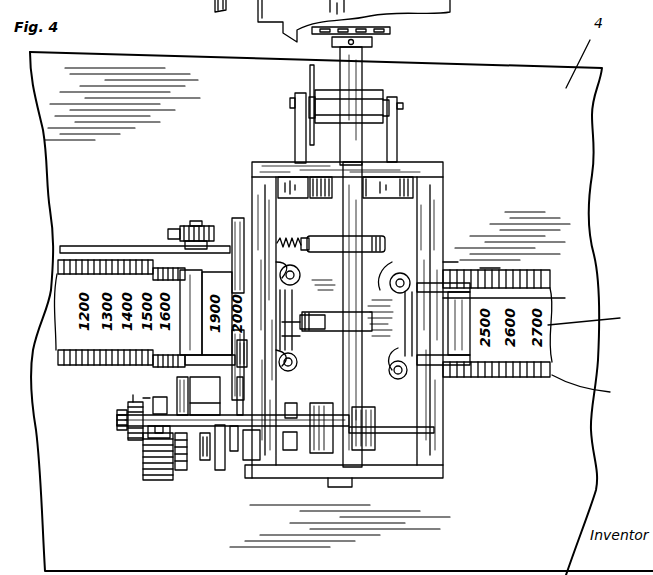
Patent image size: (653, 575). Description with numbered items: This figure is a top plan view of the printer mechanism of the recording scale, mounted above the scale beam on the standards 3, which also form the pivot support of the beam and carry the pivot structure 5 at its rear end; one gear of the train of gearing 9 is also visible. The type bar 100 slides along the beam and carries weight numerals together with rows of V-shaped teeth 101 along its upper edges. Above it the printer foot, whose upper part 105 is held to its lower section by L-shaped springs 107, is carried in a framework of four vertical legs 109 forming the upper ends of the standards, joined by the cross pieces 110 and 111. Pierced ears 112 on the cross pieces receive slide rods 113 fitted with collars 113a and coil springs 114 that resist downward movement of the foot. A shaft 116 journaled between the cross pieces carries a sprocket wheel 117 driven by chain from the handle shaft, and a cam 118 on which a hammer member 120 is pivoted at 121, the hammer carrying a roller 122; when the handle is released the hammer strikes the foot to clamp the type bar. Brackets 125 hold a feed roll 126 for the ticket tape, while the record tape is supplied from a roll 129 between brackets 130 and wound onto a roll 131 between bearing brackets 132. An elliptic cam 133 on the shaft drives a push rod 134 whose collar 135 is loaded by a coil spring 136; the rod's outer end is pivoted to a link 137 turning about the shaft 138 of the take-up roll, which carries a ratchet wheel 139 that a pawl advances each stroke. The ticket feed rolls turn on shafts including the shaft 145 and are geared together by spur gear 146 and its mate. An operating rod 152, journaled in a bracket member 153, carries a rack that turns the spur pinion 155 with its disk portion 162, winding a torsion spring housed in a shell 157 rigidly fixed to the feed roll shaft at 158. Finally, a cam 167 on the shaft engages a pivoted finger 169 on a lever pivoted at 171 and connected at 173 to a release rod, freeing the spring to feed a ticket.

The supporting standards 3 is at (284, 18).
The pivot structure 5 is at (581, 425).
The gear of train of gearing 9 is at (607, 265).
The type bar 100 is at (598, 317).
The V-shaped teeth 101 is at (595, 387).
The printer foot part 105 is at (464, 257).
The L-shaped springs 107 is at (430, 346).
The vertically extending legs 109 is at (476, 5).
The cross piece 110 is at (445, 200).
The cross piece 111 is at (410, 475).
The pierced ears 112 is at (396, 378).
The slide rods 113 is at (391, 369).
The collars 113a is at (506, 260).
The coil springs 114 is at (122, 430).
The shaft 116 is at (358, 72).
The sprocket wheel 117 is at (395, 32).
The cam 118 is at (350, 322).
The hammer member 120 is at (318, 312).
The pivot 121 is at (280, 336).
The roller 122 is at (280, 322).
The outstanding brackets 125 is at (397, 135).
The feed roll 126 is at (373, 95).
The roll 129 is at (518, 298).
The brackets 130 is at (458, 380).
The roll 131 is at (188, 296).
The bearing brackets 132 is at (232, 372).
The elliptic cam 133 is at (372, 238).
The push rod 134 is at (233, 250).
The collar 135 is at (306, 240).
The coil spring 136 is at (285, 238).
The link 137 is at (200, 224).
The shaft 138 is at (160, 246).
The ratchet wheel 139 is at (172, 232).
The shaft 145 is at (405, 433).
The spur gear 146 is at (287, 410).
The operating rod 152 is at (180, 470).
The bracket member 153 is at (136, 440).
The spur pinion 155 is at (236, 350).
The shell 157 is at (145, 472).
The rigid connection 158 is at (156, 400).
The disk portion 162 is at (205, 462).
The cam 167 is at (366, 412).
The pivoted finger 169 is at (330, 430).
The pivot 171 is at (262, 440).
The pivotal connection 173 is at (160, 398).